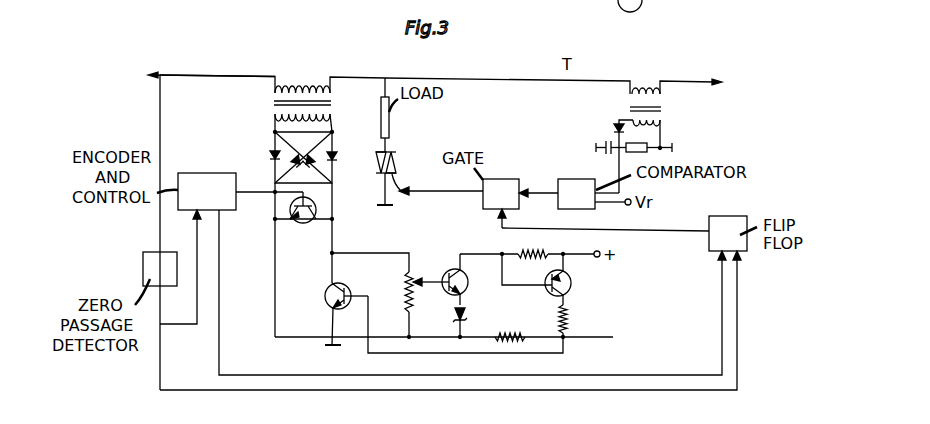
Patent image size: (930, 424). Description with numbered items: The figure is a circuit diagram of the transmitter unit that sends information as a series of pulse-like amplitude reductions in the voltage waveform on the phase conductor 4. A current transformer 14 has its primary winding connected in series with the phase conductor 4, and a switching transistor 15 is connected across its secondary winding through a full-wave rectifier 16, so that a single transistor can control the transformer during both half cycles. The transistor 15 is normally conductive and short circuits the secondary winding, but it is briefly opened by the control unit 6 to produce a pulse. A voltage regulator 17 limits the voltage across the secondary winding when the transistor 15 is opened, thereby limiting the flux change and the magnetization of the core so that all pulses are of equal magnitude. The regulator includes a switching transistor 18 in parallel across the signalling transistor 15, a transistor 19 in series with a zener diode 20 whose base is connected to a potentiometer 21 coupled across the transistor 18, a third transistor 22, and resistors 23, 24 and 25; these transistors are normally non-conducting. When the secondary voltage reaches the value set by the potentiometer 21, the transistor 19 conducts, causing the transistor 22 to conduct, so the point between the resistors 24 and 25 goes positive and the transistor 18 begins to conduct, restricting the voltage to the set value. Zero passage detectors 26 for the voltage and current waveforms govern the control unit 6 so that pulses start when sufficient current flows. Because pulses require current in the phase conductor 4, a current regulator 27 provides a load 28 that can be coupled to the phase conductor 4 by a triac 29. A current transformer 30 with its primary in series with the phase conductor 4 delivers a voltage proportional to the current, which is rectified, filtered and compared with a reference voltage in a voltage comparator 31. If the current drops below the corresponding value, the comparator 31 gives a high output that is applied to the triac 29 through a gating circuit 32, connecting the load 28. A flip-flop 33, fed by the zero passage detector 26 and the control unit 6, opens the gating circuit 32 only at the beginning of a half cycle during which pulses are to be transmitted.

The phase conductor 4 is at (233, 74).
The control unit 6 is at (198, 176).
The current transformer 14 is at (279, 102).
The switching transistor 15 is at (304, 223).
The full-wave rectifier 16 is at (275, 156).
The voltage regulator 17 is at (448, 257).
The switching transistor 18 is at (325, 296).
The transistor 19 is at (465, 286).
The zener diode 20 is at (455, 318).
The potentiometer 21 is at (404, 284).
The third transistor 22 is at (571, 284).
The resistor 23 is at (527, 253).
The resistor 24 is at (568, 317).
The resistor 25 is at (512, 336).
The zero passage detector 26 is at (149, 253).
The current regulator 27 is at (542, 150).
The load 28 is at (390, 118).
The triac 29 is at (398, 160).
The current transformer 30 is at (663, 101).
The voltage comparator 31 is at (573, 185).
The gating circuit 32 is at (499, 185).
The flip-flop 33 is at (723, 214).